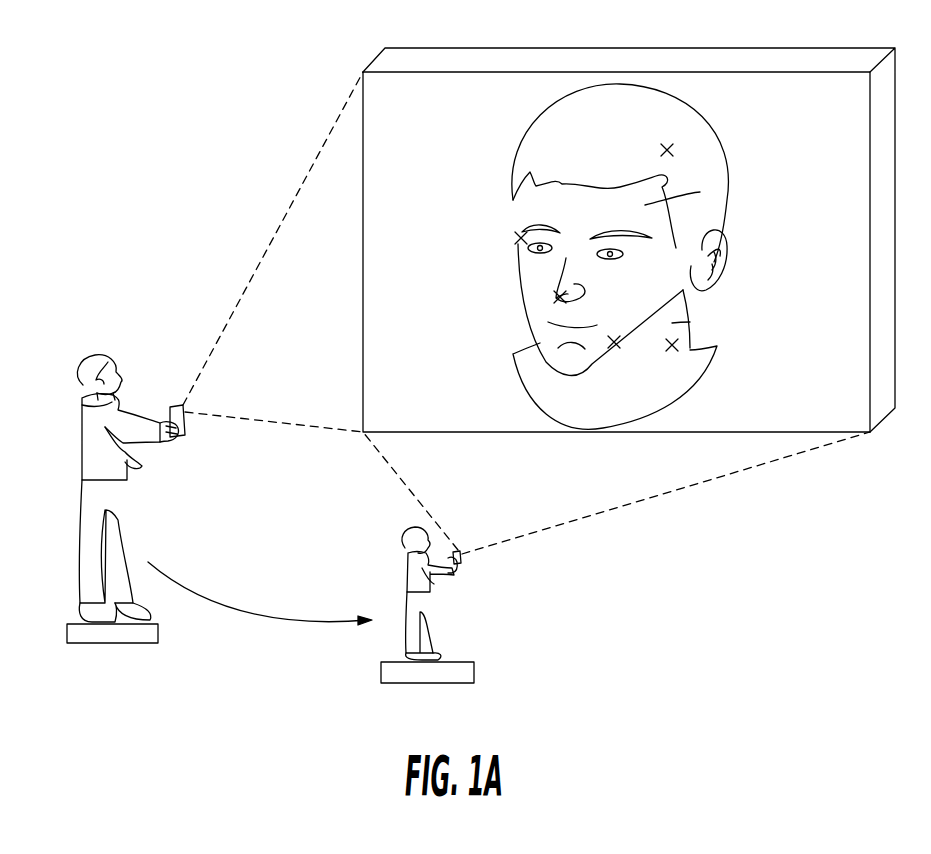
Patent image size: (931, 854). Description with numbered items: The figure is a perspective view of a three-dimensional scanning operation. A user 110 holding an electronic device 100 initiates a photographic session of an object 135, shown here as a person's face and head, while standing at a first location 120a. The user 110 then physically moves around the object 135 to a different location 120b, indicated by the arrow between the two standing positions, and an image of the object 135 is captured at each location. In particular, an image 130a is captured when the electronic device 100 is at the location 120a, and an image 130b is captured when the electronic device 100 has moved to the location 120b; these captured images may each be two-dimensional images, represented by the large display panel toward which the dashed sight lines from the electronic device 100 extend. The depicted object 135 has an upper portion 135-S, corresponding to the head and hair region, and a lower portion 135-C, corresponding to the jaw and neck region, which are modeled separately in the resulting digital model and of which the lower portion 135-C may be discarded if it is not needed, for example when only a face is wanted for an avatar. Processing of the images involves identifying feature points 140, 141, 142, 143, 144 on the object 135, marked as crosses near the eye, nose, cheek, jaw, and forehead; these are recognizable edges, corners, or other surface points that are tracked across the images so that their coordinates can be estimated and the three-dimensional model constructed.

The electronic device 100 is at (187, 428).
The user 110 is at (82, 436).
The location 120a is at (160, 633).
The different location 120b is at (475, 675).
The image 130a is at (782, 85).
The image 130b is at (838, 37).
The object 135 is at (480, 156).
The upper portion of the object 135-S is at (645, 205).
The lower portion of the object 135-C is at (672, 323).
The feature point 140 is at (521, 238).
The feature point 141 is at (573, 285).
The feature point 142 is at (613, 340).
The feature point 143 is at (688, 343).
The feature point 144 is at (664, 146).